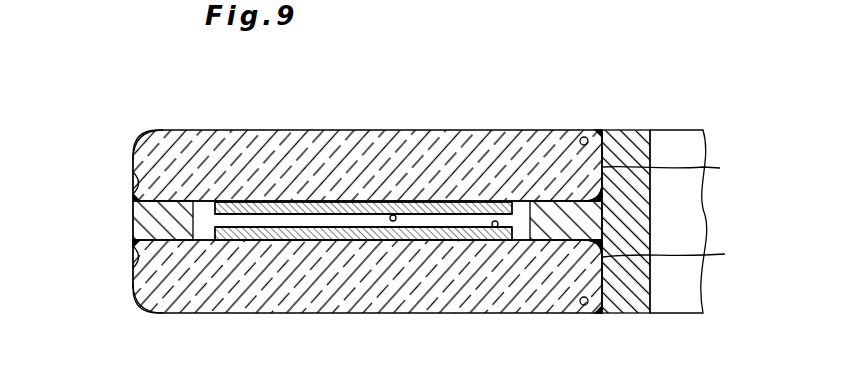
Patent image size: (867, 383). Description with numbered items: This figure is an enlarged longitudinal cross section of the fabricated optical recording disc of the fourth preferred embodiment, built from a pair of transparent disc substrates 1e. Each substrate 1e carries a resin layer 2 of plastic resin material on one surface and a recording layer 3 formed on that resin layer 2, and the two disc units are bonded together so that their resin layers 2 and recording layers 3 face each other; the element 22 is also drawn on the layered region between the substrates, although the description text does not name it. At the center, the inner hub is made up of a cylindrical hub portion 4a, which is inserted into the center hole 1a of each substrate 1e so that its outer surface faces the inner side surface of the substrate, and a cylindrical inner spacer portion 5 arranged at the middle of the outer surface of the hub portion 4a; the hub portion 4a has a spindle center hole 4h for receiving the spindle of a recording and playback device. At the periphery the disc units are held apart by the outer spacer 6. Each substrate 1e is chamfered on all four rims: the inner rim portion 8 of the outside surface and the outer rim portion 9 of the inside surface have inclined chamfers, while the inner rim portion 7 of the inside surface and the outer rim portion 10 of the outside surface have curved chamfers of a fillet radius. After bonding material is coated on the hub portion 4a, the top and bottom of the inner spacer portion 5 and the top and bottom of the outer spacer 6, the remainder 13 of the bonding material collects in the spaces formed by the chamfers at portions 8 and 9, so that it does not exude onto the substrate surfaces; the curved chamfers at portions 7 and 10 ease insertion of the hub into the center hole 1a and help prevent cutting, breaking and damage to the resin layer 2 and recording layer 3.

The transparent disc substrate 1e is at (290, 150).
The center hole 1a is at (678, 211).
The resin layer 2 is at (355, 202).
The recording layer 3 is at (393, 215).
The electrode coating 22 is at (443, 205).
The cylindrical hub portion 4a is at (633, 158).
The spindle center hole 4h is at (678, 140).
The inner spacer portion 5 is at (558, 245).
The outer spacer 6 is at (140, 220).
The inner rim portion of the inside surface 7 is at (587, 197).
The inner rim portion of the outside surface 8 is at (582, 137).
The outer rim portion of the inside surface 9 is at (137, 185).
The outer rim portion of the outside surface 10 is at (136, 138).
The remainder of the bonding material 13 is at (137, 197).